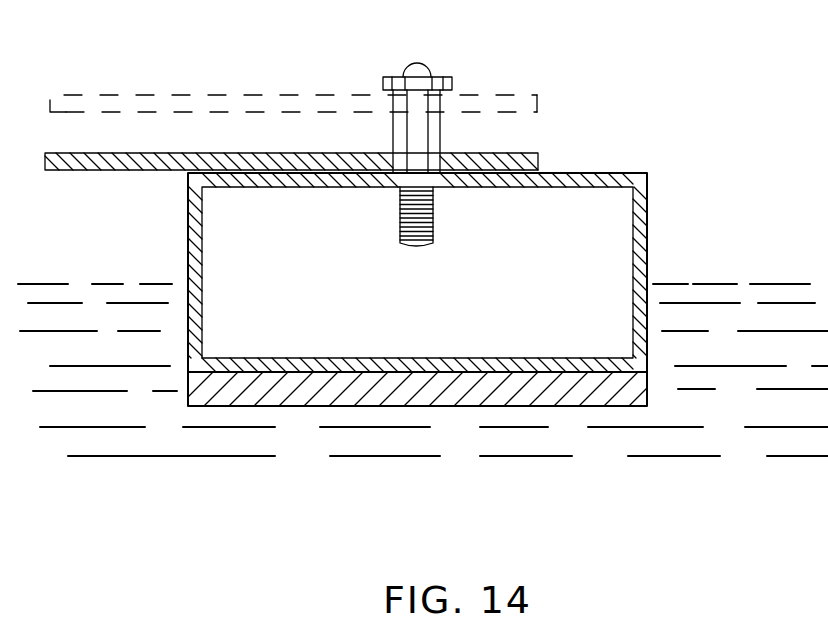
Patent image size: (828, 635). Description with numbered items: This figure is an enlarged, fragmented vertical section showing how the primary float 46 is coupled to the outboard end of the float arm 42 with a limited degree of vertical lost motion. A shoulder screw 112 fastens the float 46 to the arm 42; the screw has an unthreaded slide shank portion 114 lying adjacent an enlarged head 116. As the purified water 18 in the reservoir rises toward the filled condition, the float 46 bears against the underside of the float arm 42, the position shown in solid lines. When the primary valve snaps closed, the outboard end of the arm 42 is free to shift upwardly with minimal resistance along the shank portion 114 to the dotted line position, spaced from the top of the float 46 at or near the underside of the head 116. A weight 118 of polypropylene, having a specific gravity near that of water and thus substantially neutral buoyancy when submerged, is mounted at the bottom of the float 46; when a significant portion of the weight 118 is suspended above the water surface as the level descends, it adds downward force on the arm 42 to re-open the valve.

The purified water 18 is at (764, 312).
The float arm 42 is at (140, 171).
The primary float 46 is at (608, 257).
The shoulder screw 112 is at (486, 127).
The slide shank portion 114 is at (440, 128).
The enlarged head 116 is at (381, 76).
The weight 118 is at (560, 395).